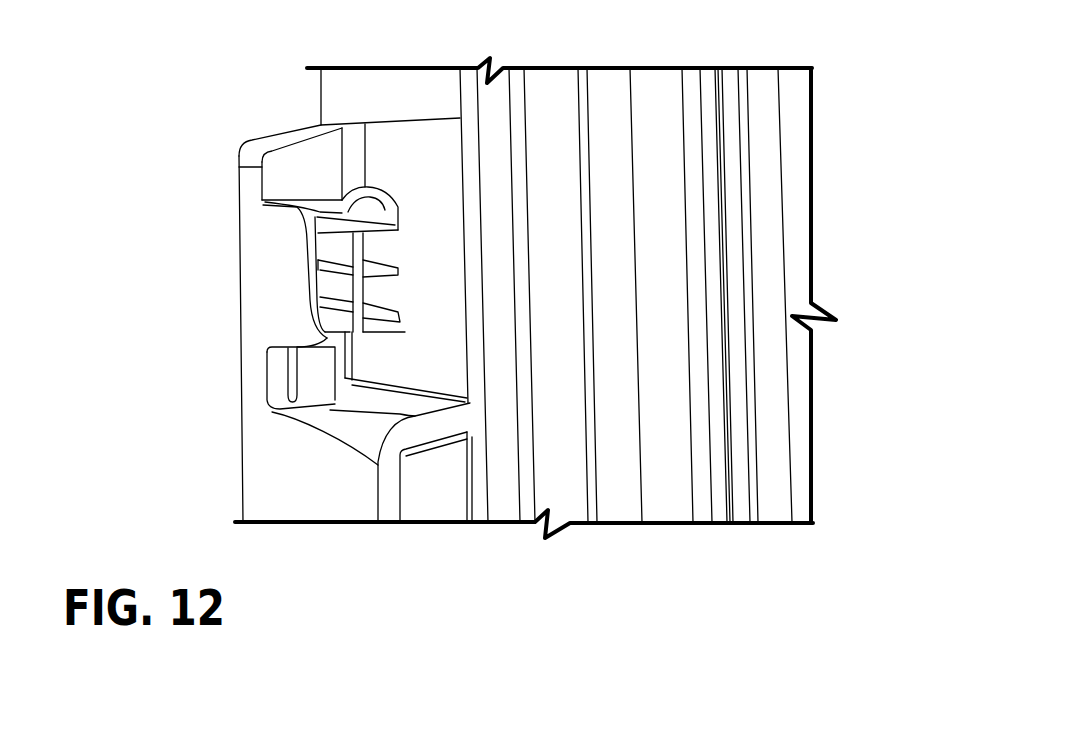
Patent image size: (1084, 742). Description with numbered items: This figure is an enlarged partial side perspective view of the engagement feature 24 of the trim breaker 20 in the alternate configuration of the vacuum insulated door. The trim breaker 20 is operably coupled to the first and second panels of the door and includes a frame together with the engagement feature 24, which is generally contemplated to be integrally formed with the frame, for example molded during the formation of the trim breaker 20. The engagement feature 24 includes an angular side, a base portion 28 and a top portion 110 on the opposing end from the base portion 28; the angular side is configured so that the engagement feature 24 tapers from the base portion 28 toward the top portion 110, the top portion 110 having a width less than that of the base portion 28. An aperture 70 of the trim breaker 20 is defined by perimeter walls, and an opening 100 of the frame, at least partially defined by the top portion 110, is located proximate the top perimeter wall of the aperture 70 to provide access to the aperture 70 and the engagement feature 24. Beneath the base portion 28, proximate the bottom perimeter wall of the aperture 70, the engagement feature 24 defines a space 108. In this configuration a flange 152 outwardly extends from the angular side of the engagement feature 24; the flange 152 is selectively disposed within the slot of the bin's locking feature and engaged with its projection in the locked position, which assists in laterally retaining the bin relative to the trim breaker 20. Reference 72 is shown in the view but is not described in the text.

The trim breaker 20 is at (787, 138).
The engagement feature 24 is at (277, 283).
The base portion 28 is at (315, 381).
The aperture 70 is at (423, 157).
The interior region 72 is at (830, 230).
The opening 100 is at (357, 93).
The space 108 is at (332, 340).
The top portion 110 is at (318, 212).
The flange 152 is at (345, 300).